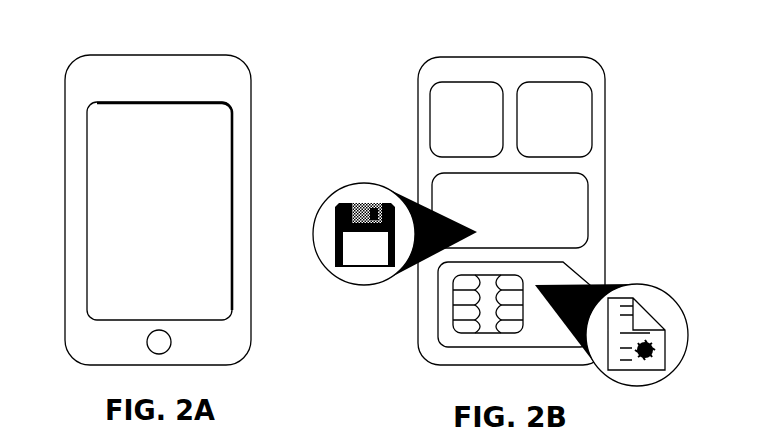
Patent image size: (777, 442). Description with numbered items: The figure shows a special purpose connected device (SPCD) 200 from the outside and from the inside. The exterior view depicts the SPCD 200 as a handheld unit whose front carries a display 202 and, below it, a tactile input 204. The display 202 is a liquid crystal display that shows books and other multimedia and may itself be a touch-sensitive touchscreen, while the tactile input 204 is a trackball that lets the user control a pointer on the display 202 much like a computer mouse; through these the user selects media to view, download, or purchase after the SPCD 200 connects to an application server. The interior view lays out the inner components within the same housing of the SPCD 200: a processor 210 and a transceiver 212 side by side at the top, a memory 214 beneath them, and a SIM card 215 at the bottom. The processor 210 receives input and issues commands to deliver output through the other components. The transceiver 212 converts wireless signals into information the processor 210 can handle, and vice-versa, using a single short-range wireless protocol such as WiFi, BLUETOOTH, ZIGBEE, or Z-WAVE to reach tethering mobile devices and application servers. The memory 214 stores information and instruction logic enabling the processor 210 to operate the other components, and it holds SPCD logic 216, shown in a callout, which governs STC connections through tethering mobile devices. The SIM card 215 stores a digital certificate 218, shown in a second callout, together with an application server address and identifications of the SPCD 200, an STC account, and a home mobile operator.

In FIG. 2A, the special purpose connected device 200 is at (128, 55).
In FIG. 2B, the special purpose connected device 200 is at (528, 57).
In FIG. 2A, the display 202 is at (232, 185).
In FIG. 2A, the tactile input 204 is at (145, 352).
In FIG. 2B, the processor 210 is at (430, 120).
In FIG. 2B, the transceiver 212 is at (590, 118).
In FIG. 2B, the memory 214 is at (587, 210).
In FIG. 2B, the SIM card 215 is at (440, 310).
In FIG. 2B, the SPCD logic 216 is at (352, 265).
In FIG. 2B, the digital certificate 218 is at (598, 374).